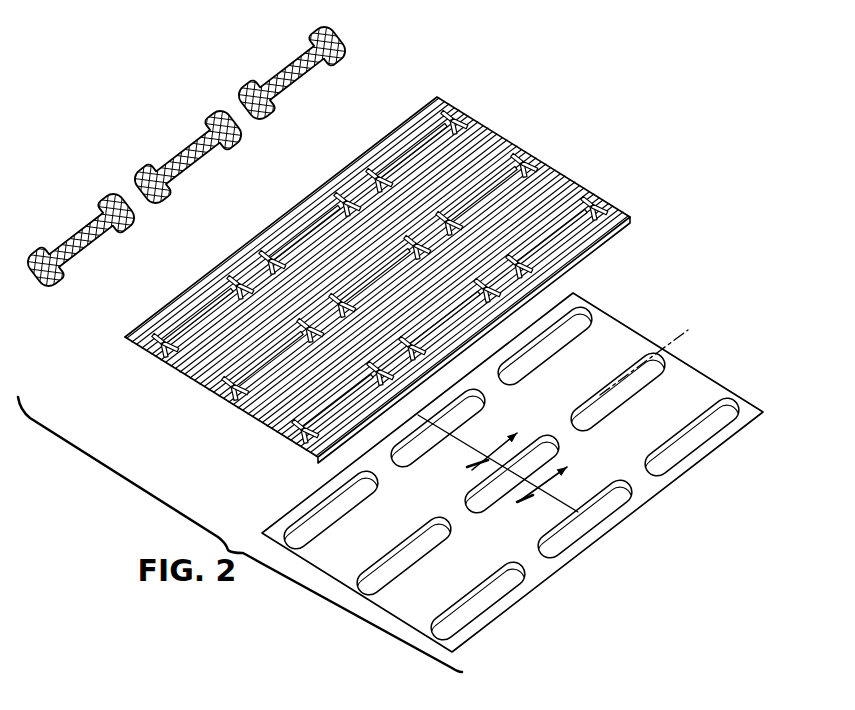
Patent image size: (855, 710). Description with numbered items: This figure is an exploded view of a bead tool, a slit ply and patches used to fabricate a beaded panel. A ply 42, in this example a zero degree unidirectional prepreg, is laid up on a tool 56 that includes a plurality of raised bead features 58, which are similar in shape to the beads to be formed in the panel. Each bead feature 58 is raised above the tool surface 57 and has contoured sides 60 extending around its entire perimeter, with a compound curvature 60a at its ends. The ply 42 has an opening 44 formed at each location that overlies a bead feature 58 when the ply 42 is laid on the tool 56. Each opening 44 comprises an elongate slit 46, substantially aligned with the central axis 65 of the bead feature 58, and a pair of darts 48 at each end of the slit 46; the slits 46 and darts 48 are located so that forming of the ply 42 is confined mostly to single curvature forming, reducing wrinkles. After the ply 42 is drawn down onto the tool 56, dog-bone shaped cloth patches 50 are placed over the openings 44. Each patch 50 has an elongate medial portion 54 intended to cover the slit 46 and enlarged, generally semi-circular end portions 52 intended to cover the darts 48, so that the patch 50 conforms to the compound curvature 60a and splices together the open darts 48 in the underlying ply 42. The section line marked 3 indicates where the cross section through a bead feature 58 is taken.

The ply 42 is at (483, 148).
The opening 44 is at (387, 244).
The elongate slit 46 is at (577, 227).
The dart 48 is at (587, 205).
The patch 50 is at (267, 65).
The end portion 52 is at (80, 233).
The elongate medial portion 54 is at (33, 280).
The tool 56 is at (513, 465).
The tool surface 57 is at (678, 400).
The bead feature 58 is at (508, 483).
The contoured sides 60 is at (503, 595).
The compound curvature 60a is at (555, 552).
The central axis 65 is at (665, 347).
The section line for FIG. 3 is at (499, 459).